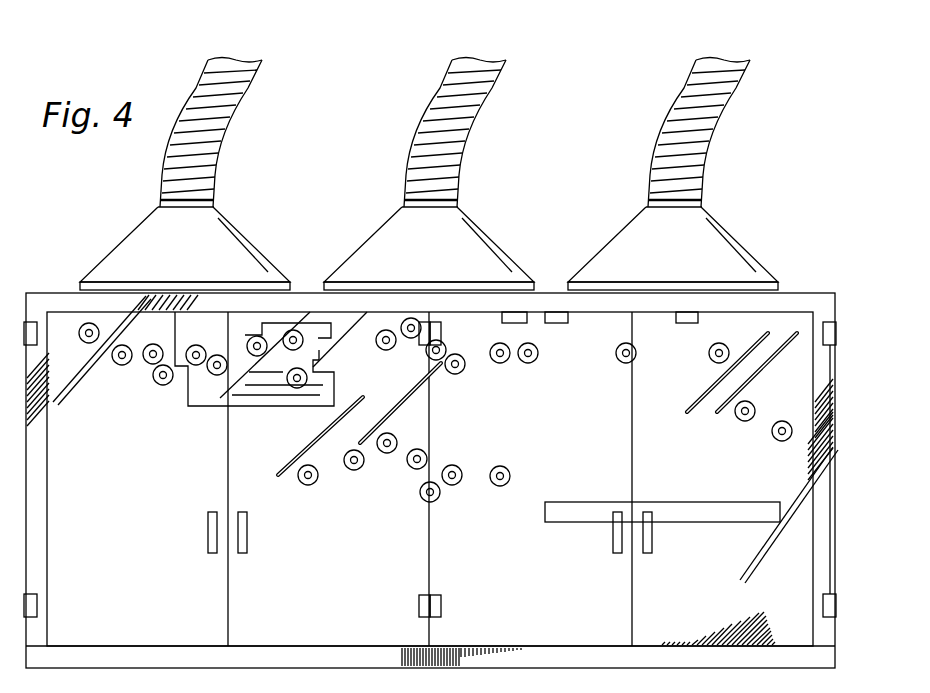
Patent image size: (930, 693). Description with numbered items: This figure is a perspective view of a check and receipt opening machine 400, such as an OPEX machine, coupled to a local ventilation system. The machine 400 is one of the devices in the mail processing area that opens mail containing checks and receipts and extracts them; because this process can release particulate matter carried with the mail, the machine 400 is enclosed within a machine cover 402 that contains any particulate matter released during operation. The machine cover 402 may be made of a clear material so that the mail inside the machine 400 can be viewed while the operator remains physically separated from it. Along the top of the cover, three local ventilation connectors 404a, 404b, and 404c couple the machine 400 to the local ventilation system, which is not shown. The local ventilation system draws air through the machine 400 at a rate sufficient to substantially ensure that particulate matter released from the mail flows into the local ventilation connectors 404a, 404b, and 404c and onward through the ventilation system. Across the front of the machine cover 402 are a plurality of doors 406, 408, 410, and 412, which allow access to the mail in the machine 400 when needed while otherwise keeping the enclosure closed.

The check and receipt opening machine 400 is at (60, 308).
The machine cover 402 is at (804, 290).
The local ventilation connector 404a is at (120, 246).
The local ventilation connector 404b is at (365, 246).
The local ventilation connector 404c is at (762, 224).
The door 406 is at (147, 609).
The door 408 is at (349, 609).
The door 410 is at (550, 609).
The door 412 is at (754, 609).